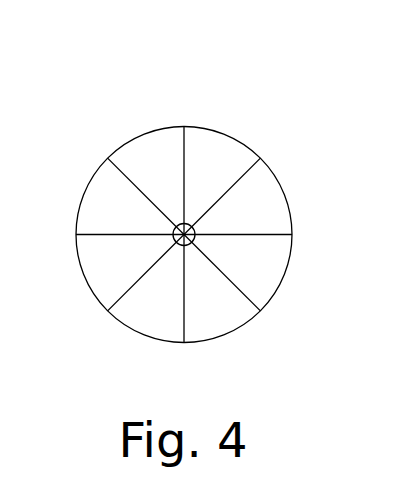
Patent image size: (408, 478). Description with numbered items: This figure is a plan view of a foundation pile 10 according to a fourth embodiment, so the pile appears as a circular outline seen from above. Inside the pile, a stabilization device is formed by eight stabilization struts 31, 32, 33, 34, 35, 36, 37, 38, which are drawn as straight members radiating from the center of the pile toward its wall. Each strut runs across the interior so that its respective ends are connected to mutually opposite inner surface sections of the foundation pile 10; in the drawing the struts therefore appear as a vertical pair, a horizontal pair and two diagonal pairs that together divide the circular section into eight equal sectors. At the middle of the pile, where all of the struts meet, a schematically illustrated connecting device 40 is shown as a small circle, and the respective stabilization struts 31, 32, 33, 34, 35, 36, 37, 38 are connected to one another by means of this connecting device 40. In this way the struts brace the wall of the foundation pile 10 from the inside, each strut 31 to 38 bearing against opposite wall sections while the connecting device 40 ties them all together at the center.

The foundation pile 10 is at (124, 138).
The connecting device 40 is at (177, 212).
The stabilization strut 31 is at (243, 295).
The stabilization strut 32 is at (190, 303).
The stabilization strut 33 is at (137, 282).
The stabilization strut 34 is at (112, 236).
The stabilization strut 35 is at (122, 180).
The stabilization strut 36 is at (192, 157).
The stabilization strut 37 is at (243, 178).
The stabilization strut 38 is at (270, 233).